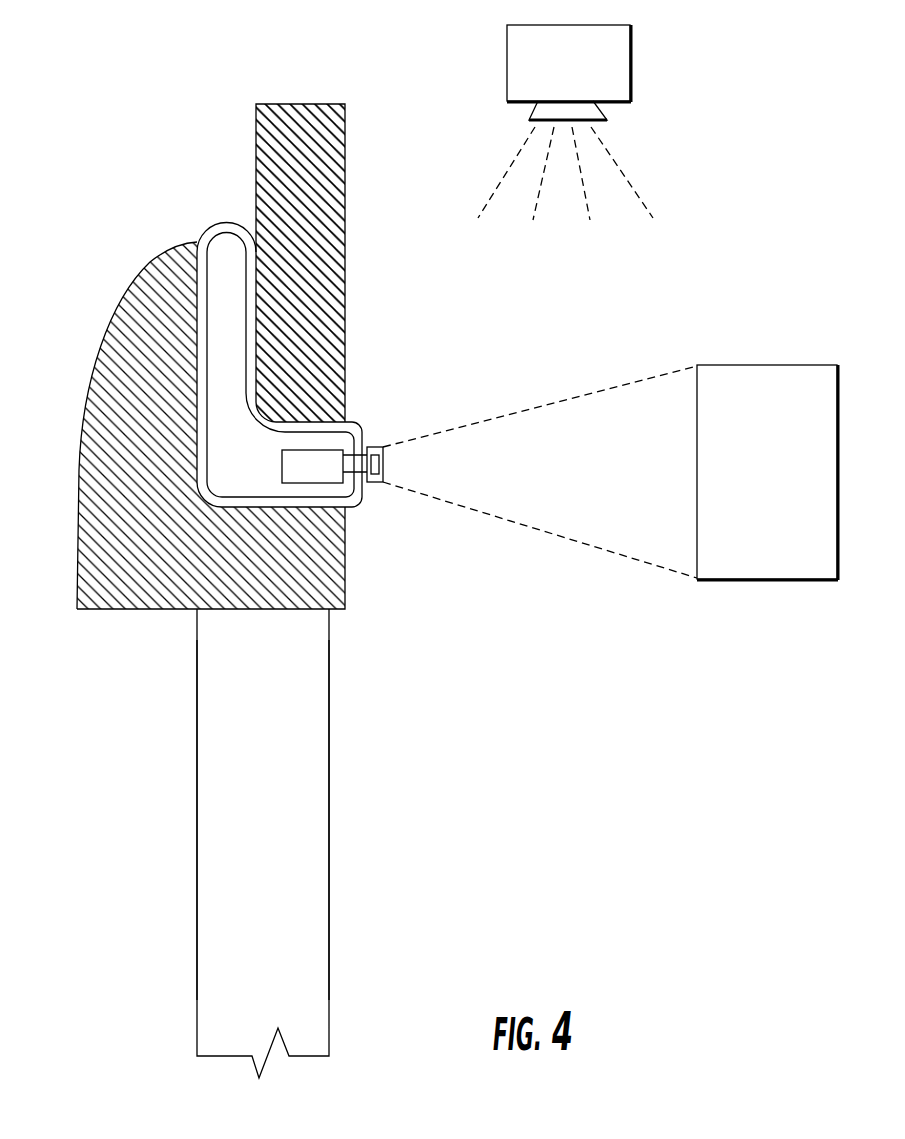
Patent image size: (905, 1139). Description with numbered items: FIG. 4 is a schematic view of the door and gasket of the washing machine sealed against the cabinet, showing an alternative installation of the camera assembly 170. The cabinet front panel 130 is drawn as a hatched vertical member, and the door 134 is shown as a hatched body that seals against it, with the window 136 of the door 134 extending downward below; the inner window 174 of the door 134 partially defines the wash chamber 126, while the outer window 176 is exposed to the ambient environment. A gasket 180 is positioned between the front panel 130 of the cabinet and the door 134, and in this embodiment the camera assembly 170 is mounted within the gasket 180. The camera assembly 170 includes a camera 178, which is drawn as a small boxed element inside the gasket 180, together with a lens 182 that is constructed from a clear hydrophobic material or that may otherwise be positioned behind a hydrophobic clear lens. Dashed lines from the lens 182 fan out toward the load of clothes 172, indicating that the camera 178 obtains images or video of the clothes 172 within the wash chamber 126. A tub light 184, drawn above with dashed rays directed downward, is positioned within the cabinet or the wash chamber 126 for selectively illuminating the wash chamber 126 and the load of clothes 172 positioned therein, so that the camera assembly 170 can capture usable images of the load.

The wash chamber 126 is at (475, 785).
The front panel 130 is at (346, 168).
The door 134 is at (100, 376).
The window 136 is at (277, 785).
The camera assembly 170 is at (402, 413).
The load of clothes 172 is at (783, 475).
The inner window 174 is at (330, 718).
The outer window 176 is at (198, 733).
The camera 178 is at (324, 467).
The gasket 180 is at (311, 305).
The lens 182 is at (383, 457).
The tub light 184 is at (548, 78).